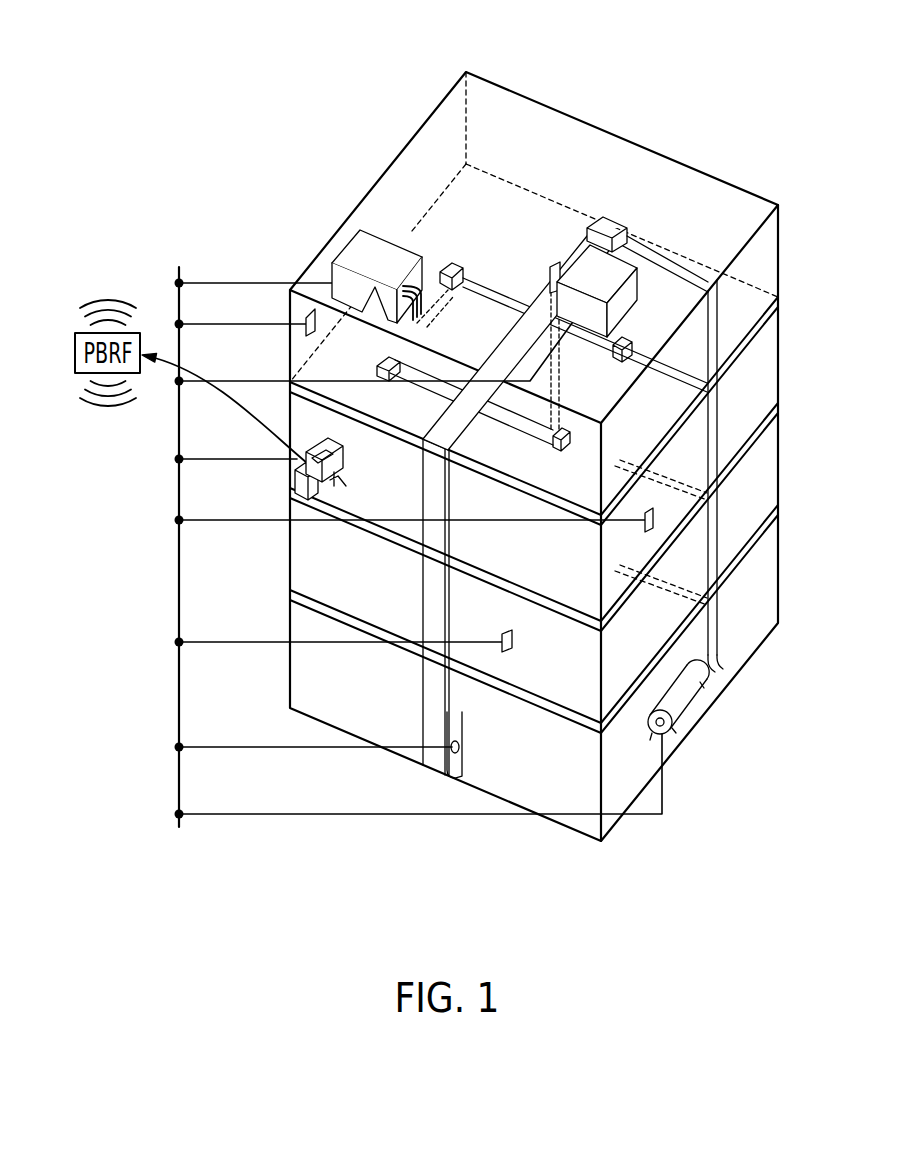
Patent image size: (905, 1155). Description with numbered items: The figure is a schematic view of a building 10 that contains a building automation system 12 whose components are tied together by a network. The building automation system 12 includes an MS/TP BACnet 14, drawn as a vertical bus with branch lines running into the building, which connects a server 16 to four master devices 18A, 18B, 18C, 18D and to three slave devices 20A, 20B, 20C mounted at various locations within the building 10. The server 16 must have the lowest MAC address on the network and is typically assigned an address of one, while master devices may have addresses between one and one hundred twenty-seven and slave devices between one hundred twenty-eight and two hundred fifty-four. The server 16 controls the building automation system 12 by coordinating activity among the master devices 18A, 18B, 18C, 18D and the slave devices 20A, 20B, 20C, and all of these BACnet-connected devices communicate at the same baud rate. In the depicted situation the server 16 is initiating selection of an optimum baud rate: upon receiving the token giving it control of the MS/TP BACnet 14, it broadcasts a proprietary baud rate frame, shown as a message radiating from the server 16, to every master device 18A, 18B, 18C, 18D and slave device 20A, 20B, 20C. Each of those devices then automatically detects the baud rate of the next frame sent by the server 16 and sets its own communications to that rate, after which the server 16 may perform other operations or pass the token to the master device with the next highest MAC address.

The building 10 is at (362, 76).
The building automation system 12 is at (304, 431).
The MS/TP BACnet 14 is at (178, 557).
The server 16 is at (300, 462).
The master device 18A is at (385, 260).
The master device 18B is at (622, 258).
The master device 18C is at (706, 690).
The master device 18D is at (461, 745).
The slave device 20A is at (317, 330).
The slave device 20B is at (655, 516).
The slave device 20C is at (514, 646).